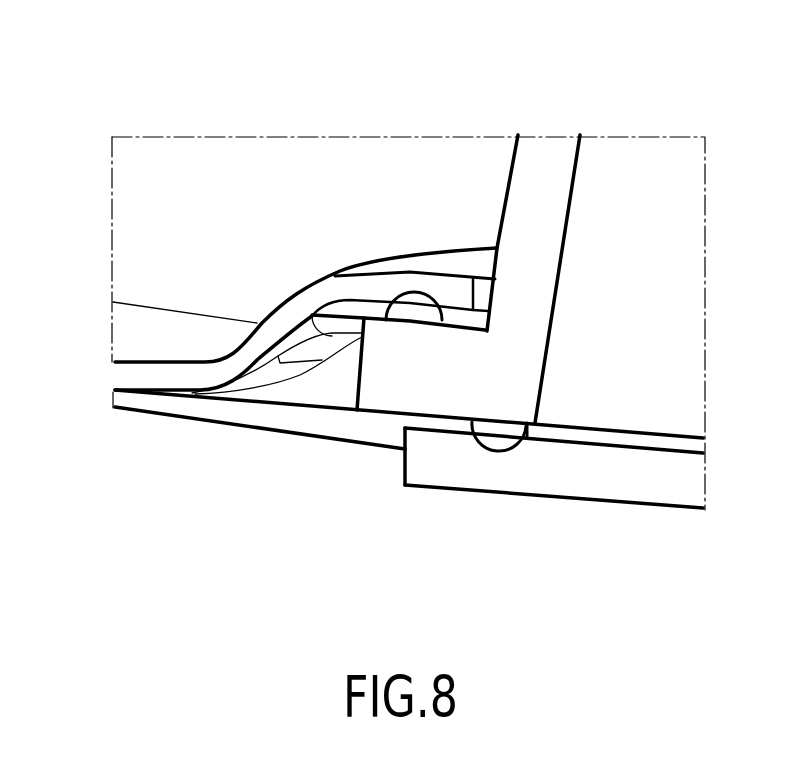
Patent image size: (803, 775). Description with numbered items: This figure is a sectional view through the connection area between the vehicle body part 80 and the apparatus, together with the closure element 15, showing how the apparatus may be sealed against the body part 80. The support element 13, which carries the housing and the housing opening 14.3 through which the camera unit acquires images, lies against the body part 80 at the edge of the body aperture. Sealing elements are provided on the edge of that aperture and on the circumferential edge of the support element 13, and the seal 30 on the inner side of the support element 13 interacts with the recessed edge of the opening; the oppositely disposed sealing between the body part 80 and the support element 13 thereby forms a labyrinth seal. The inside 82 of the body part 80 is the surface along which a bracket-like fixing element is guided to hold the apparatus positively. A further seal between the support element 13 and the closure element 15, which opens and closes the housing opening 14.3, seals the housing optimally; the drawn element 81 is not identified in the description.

The support element 13 is at (390, 382).
The housing opening 14.3 is at (570, 403).
The closure element 15 is at (603, 470).
The seal 30 is at (416, 300).
The body part 80 is at (168, 375).
The inner layer 81 is at (190, 392).
The inside of the body part 82 is at (148, 361).